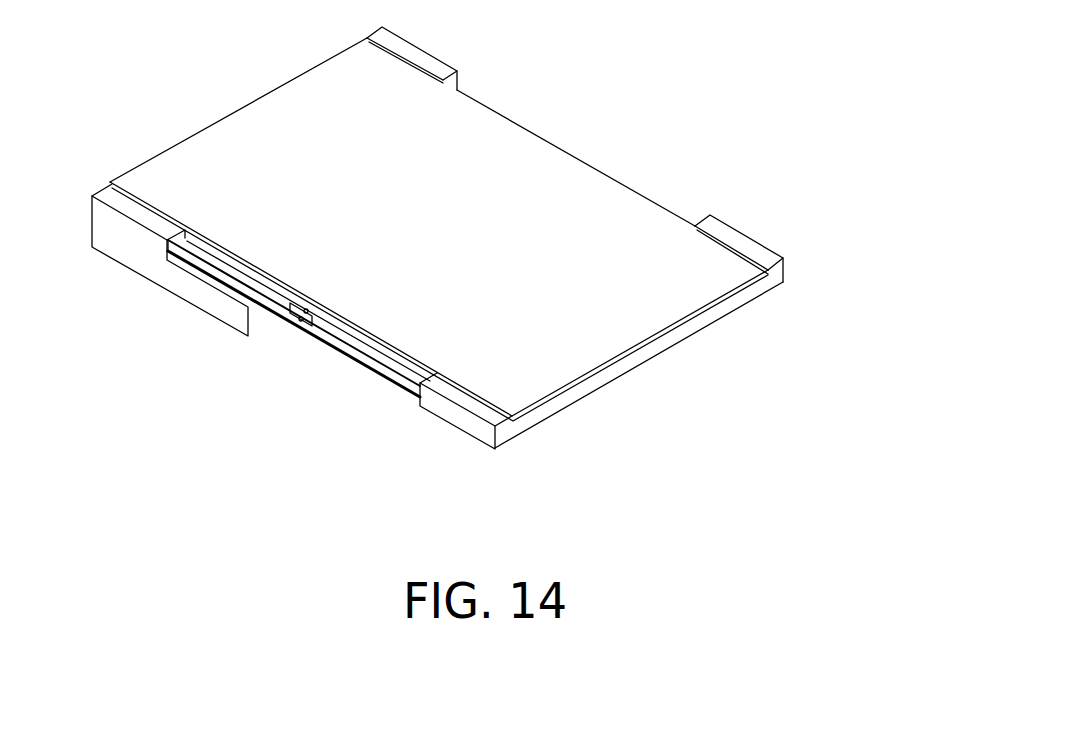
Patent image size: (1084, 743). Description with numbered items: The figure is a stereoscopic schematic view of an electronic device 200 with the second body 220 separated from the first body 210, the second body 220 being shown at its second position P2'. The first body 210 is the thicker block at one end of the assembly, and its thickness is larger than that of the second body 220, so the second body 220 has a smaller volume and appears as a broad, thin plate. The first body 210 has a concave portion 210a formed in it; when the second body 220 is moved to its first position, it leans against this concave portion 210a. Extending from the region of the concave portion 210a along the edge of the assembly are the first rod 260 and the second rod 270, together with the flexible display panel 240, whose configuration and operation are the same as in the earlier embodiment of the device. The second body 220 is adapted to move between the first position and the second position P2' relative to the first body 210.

The electronic device 200 is at (484, 294).
The first body 210 is at (148, 205).
The concave portion 210a is at (208, 266).
The second body 220 is at (623, 367).
The flexible display panel 240 is at (357, 302).
The first rod 260 is at (233, 280).
The second rod 270 is at (390, 367).
The second position P2' is at (860, 272).